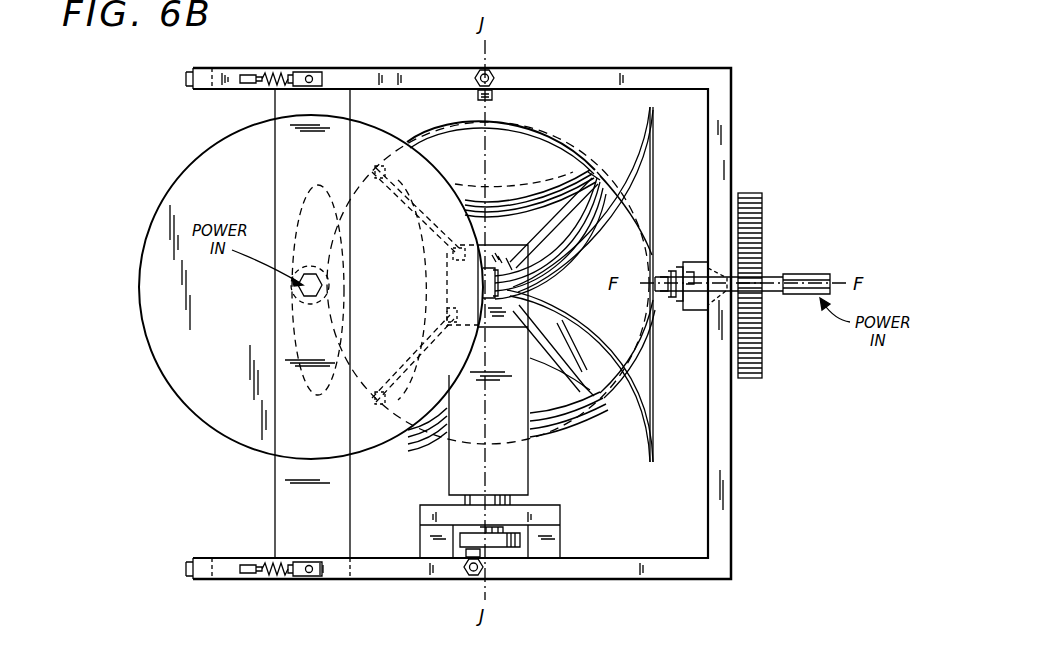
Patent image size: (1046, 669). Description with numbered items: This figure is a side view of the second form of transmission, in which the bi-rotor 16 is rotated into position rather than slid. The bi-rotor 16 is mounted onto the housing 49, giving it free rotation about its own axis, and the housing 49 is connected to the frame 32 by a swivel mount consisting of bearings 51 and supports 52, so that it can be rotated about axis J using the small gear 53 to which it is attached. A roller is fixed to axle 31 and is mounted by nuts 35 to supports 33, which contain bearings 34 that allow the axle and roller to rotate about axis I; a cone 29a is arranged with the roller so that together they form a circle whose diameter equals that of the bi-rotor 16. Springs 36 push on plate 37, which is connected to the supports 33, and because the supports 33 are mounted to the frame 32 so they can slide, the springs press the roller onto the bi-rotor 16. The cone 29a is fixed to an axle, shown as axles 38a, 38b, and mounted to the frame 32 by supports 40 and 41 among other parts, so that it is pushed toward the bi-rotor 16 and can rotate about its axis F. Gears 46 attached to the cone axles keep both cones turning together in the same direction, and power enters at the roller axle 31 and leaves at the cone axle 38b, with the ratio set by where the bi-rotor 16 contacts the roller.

The bi-rotor 16 is at (487, 118).
The cone 29a is at (653, 122).
The axle 31 is at (306, 298).
The frame 32 is at (731, 68).
The supports 33 is at (276, 104).
The bearings 34 is at (354, 290).
The nuts 35 is at (318, 268).
The springs 36 is at (276, 72).
The plate 37 is at (298, 72).
The axle 38a is at (780, 292).
The axle 38b is at (815, 276).
The support 40 is at (476, 95).
The support 41 is at (696, 272).
The gears 46 is at (760, 232).
The housing 49 is at (530, 458).
The bearings 51 is at (512, 503).
The supports 52 is at (552, 514).
The small gear 53 is at (522, 543).